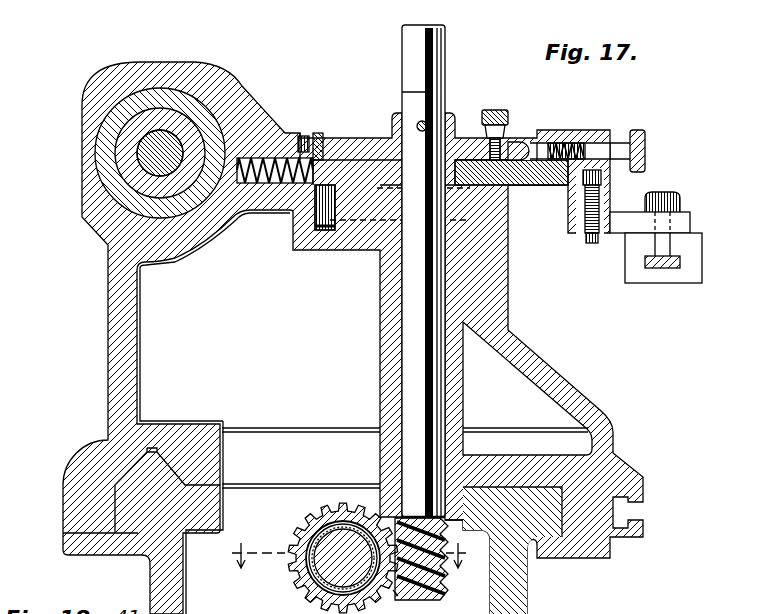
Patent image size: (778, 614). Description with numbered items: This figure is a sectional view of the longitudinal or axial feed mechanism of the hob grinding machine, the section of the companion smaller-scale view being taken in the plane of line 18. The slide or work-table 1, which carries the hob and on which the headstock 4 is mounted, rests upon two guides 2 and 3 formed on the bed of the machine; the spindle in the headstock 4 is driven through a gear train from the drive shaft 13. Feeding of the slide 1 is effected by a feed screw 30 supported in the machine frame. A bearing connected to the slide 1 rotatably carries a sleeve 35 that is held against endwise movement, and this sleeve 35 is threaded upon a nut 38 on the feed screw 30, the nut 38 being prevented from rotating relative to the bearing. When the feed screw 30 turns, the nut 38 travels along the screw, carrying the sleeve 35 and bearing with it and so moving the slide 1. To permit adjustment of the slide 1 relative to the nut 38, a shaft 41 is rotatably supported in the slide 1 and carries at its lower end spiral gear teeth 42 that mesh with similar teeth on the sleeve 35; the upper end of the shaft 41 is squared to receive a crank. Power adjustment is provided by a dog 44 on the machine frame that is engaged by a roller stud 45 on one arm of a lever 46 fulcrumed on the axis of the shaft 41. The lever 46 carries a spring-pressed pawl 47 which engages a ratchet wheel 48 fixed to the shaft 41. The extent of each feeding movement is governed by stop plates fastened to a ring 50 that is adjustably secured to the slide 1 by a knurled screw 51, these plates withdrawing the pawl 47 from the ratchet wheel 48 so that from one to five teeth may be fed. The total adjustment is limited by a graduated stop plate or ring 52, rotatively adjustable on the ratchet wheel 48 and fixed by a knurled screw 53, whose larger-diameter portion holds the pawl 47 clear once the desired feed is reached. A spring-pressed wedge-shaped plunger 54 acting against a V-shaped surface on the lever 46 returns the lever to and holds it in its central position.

The slide or work-table 1 is at (120, 398).
The guide 2 is at (553, 522).
The guide 3 is at (128, 505).
The headstock 4 is at (163, 70).
The drive shaft 13 is at (393, 592).
The section line 18 is at (345, 557).
The feed screw 30 is at (317, 567).
The sleeve 35 is at (310, 533).
The nut 38 is at (298, 588).
The shaft 41 is at (415, 370).
The spiral gear teeth 42 is at (442, 600).
The dog 44 is at (630, 222).
The roller stud 45 is at (578, 222).
The lever 46 is at (530, 180).
The spring-pressed pawl 47 is at (542, 148).
The ratchet wheel 48 is at (460, 147).
The ring 50 is at (342, 210).
The knurled screw 51 is at (415, 235).
The stop plate or ring 52 is at (513, 138).
The knurled screw 53 is at (497, 112).
The spring-pressed wedge-shaped plunger 54 is at (308, 220).